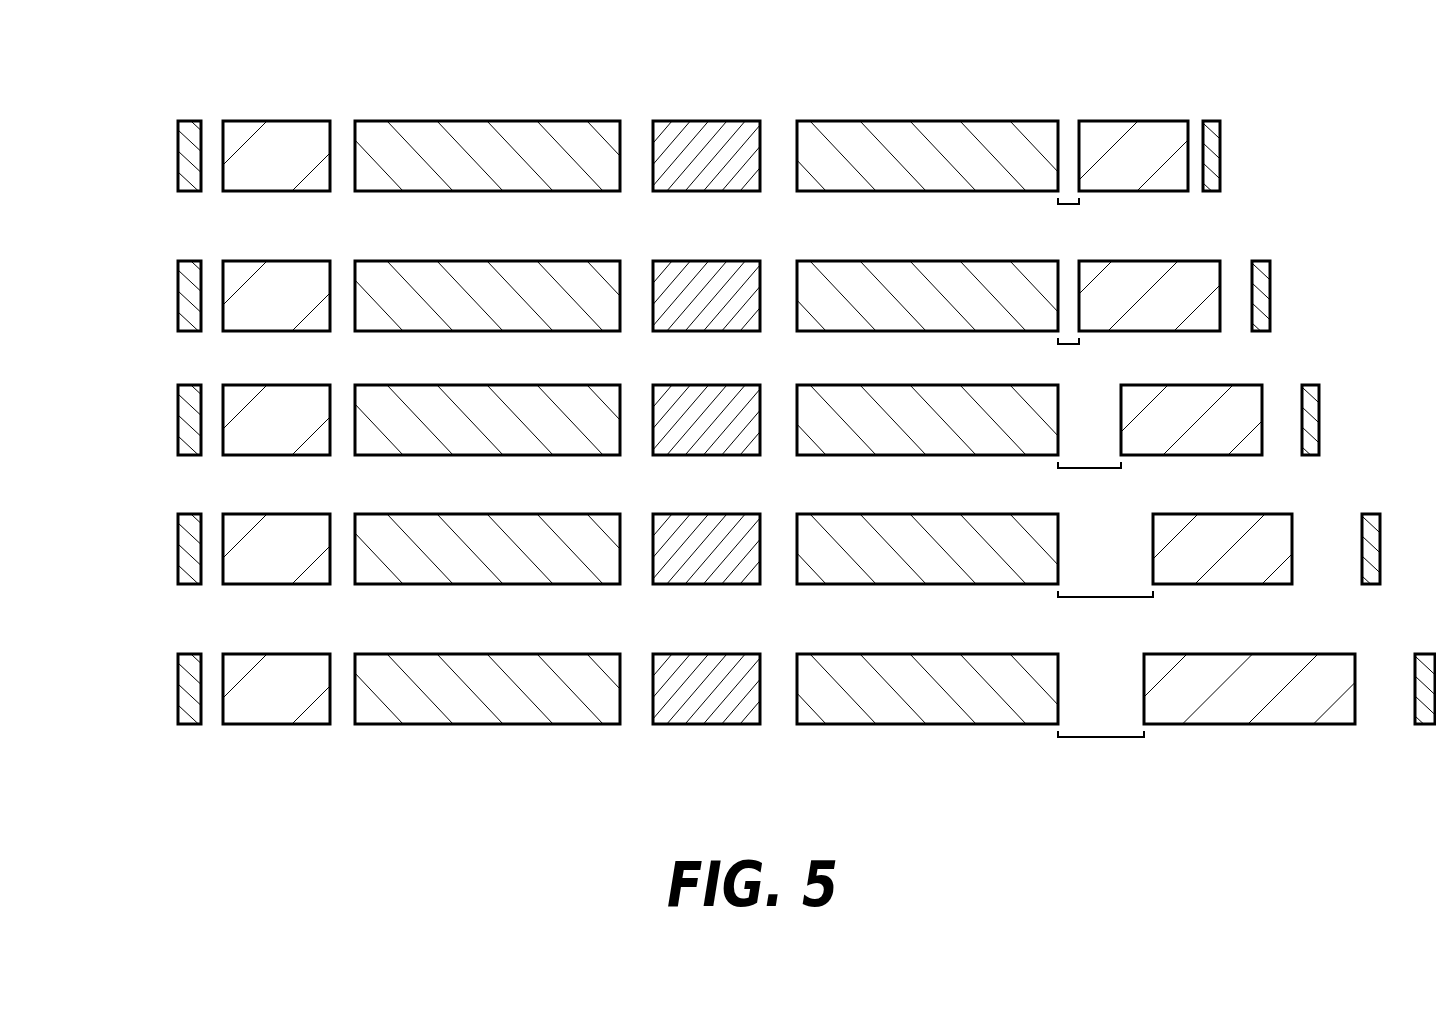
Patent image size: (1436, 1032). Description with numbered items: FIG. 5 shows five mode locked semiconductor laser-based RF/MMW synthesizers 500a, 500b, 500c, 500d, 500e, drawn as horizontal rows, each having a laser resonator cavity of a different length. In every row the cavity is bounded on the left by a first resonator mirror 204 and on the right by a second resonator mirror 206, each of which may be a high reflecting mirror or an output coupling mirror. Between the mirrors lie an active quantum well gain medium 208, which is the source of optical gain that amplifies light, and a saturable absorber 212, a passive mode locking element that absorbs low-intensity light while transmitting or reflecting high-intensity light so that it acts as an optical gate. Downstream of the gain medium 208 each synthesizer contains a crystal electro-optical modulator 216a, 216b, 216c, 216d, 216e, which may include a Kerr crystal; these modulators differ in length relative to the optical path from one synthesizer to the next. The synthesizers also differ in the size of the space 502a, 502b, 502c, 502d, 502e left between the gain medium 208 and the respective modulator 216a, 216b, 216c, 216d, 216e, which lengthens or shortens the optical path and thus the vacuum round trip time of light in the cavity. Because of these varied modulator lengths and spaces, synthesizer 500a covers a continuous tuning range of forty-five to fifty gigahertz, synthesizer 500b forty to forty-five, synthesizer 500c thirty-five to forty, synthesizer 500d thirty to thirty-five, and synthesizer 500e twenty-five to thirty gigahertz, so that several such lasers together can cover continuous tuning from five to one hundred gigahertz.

The first resonator mirror 204 is at (190, 121).
The second resonator mirror 206 is at (1213, 121).
The gain medium 208 is at (450, 121).
The saturable absorber 212 is at (693, 121).
The crystal electro-optical modulator 216a is at (1108, 121).
The crystal electro-optical modulator 216b is at (1156, 261).
The crystal electro-optical modulator 216c is at (1190, 385).
The crystal electro-optical modulator 216d is at (1230, 514).
The crystal electro-optical modulator 216e is at (1265, 654).
The synthesizer 500a is at (668, 145).
The synthesizer 500b is at (667, 291).
The synthesizer 500c is at (692, 422).
The synthesizer 500d is at (722, 550).
The synthesizer 500e is at (750, 689).
The space 502a is at (1069, 204).
The space 502b is at (1069, 344).
The space 502c is at (1090, 468).
The space 502d is at (1105, 597).
The space 502e is at (1101, 737).